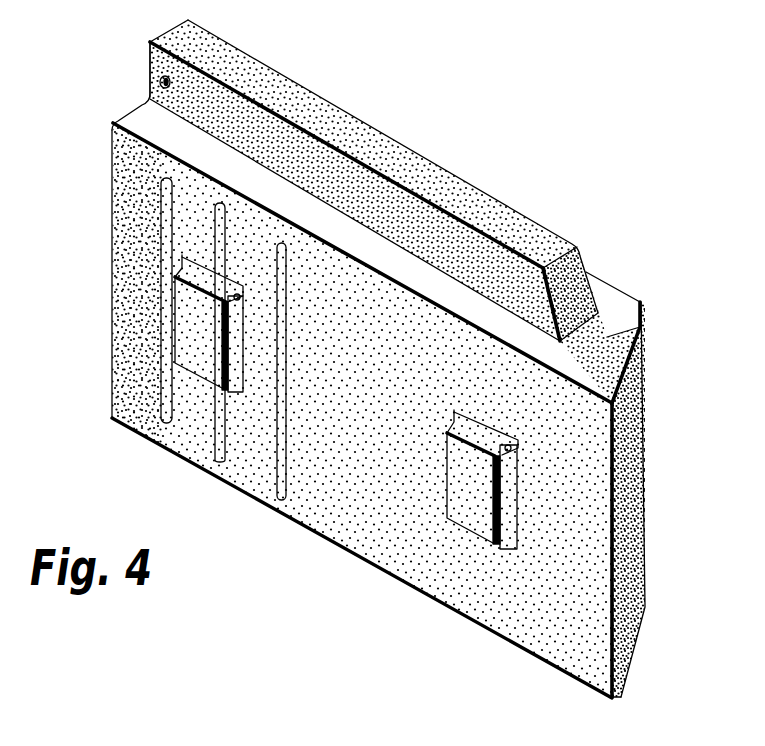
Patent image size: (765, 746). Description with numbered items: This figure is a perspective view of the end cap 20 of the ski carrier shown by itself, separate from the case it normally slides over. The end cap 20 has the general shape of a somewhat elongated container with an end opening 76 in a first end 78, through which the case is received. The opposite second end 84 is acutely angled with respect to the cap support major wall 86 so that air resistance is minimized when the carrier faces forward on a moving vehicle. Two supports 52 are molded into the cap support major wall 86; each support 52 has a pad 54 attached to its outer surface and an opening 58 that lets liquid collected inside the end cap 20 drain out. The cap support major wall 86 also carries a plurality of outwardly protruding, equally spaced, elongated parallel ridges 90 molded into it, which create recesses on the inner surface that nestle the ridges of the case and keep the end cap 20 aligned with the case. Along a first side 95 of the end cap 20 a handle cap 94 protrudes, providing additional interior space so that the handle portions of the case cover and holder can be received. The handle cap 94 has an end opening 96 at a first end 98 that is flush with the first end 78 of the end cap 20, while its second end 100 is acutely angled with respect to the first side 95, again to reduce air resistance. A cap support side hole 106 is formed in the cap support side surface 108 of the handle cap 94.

The end cap 20 is at (586, 221).
The support 52 is at (233, 376).
The pad 54 is at (200, 365).
The opening 58 is at (246, 308).
The end opening 76 is at (112, 159).
The first end 78 is at (112, 418).
The second end 84 is at (645, 492).
The cap support major wall 86 is at (568, 598).
The ridges 90 is at (280, 238).
The handle cap 94 is at (445, 192).
The first side 95 is at (642, 327).
The end opening 96 is at (150, 58).
The first end 98 is at (188, 22).
The second end 100 is at (583, 263).
The cap support side hole 106 is at (160, 82).
The cap support side surface 108 is at (180, 97).